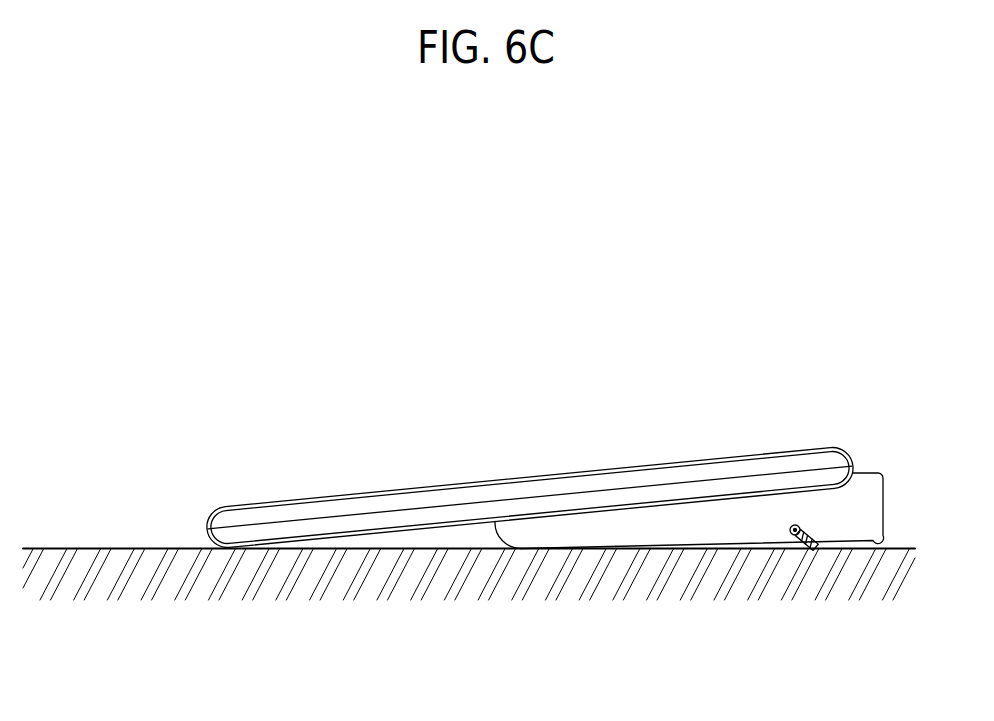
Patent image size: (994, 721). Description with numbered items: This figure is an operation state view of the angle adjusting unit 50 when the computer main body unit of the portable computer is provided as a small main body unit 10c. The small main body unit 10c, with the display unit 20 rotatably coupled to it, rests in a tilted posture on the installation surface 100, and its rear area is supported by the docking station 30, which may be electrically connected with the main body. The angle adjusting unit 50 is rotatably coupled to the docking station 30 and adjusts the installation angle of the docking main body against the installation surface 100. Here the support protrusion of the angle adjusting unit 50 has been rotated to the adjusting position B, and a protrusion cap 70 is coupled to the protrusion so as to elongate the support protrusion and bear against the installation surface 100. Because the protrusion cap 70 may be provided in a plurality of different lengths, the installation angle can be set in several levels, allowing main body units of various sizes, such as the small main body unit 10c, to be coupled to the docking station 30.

The small main body unit 10c is at (470, 515).
The display unit 20 is at (355, 495).
The docking station 30 is at (873, 460).
The angle adjusting unit 50 is at (799, 518).
The protrusion cap 70 is at (820, 552).
The installation surface 100 is at (480, 600).
The adjusting position B is at (815, 530).